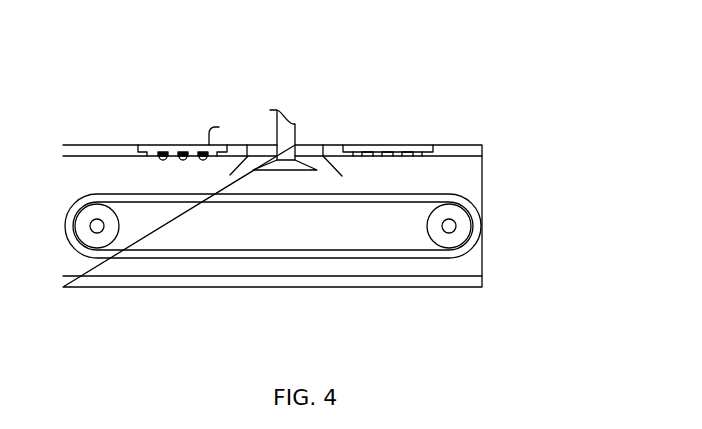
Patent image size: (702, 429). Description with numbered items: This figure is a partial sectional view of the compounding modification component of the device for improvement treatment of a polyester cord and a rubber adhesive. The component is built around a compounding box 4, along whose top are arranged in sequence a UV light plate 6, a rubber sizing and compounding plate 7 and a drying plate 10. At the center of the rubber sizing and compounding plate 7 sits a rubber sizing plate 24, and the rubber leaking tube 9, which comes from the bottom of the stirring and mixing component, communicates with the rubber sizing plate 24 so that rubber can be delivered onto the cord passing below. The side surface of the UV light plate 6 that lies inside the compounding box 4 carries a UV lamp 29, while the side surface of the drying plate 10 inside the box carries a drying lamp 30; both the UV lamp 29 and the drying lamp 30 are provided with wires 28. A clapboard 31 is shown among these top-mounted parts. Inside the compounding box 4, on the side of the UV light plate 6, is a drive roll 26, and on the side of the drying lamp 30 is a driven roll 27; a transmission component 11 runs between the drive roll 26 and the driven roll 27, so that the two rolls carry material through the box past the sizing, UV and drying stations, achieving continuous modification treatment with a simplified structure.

The compounding box 4 is at (483, 145).
The UV light plate 6 is at (372, 146).
The rubber sizing and compounding plate 7 is at (303, 145).
The rubber leaking tube 9 is at (279, 133).
The drying plate 10 is at (173, 145).
The transmission component 11 is at (477, 217).
The rubber sizing plate 24 is at (280, 169).
The drive roll 26 is at (453, 235).
The driven roll 27 is at (100, 235).
The wire 28 is at (409, 146).
The UV lamp 29 is at (370, 157).
The drying lamp 30 is at (161, 158).
The clapboard 31 is at (342, 148).